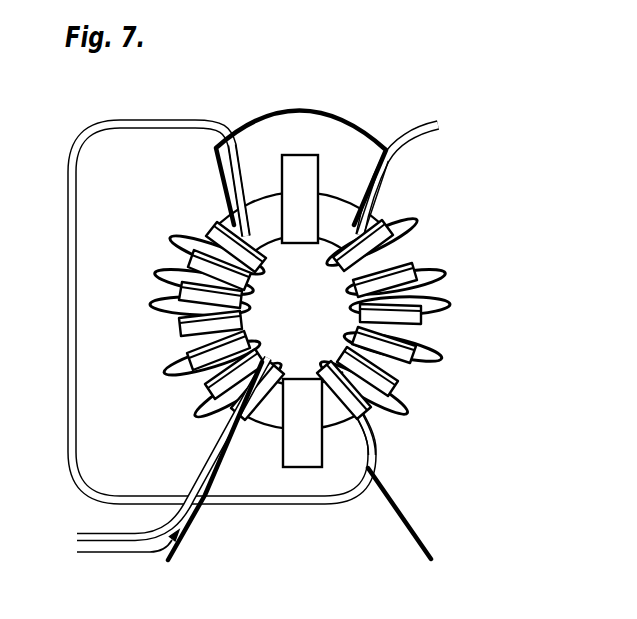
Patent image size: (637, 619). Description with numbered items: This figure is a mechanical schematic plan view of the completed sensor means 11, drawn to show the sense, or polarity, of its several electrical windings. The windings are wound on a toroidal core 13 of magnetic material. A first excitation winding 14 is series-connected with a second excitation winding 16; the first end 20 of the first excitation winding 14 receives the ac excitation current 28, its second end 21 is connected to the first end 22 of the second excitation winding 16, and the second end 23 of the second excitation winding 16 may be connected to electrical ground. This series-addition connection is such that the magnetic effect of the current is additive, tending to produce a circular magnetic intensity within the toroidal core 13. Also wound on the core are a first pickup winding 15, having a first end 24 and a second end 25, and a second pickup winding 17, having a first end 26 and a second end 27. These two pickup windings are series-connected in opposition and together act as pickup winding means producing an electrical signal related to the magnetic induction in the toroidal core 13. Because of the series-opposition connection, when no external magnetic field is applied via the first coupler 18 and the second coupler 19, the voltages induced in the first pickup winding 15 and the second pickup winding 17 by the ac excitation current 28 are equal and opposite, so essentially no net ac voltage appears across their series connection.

The sensor means 11 is at (472, 185).
The toroidal core 13 is at (327, 199).
The first excitation winding 14 is at (183, 335).
The first pickup winding 15 is at (172, 293).
The second excitation winding 16 is at (420, 324).
The second pickup winding 17 is at (440, 277).
The first coupler 18 is at (302, 137).
The second coupler 19 is at (294, 467).
The first end of first excitation winding 20 is at (199, 487).
The second end of first excitation winding 21 is at (239, 170).
The first end of second excitation winding 22 is at (373, 462).
The second end of second excitation winding 23 is at (369, 173).
The first end of first pickup winding 24 is at (231, 468).
The second end of first pickup winding 25 is at (212, 167).
The first end of second pickup winding 26 is at (385, 178).
The second end of second pickup winding 27 is at (362, 446).
The ac excitation current 28 is at (128, 555).